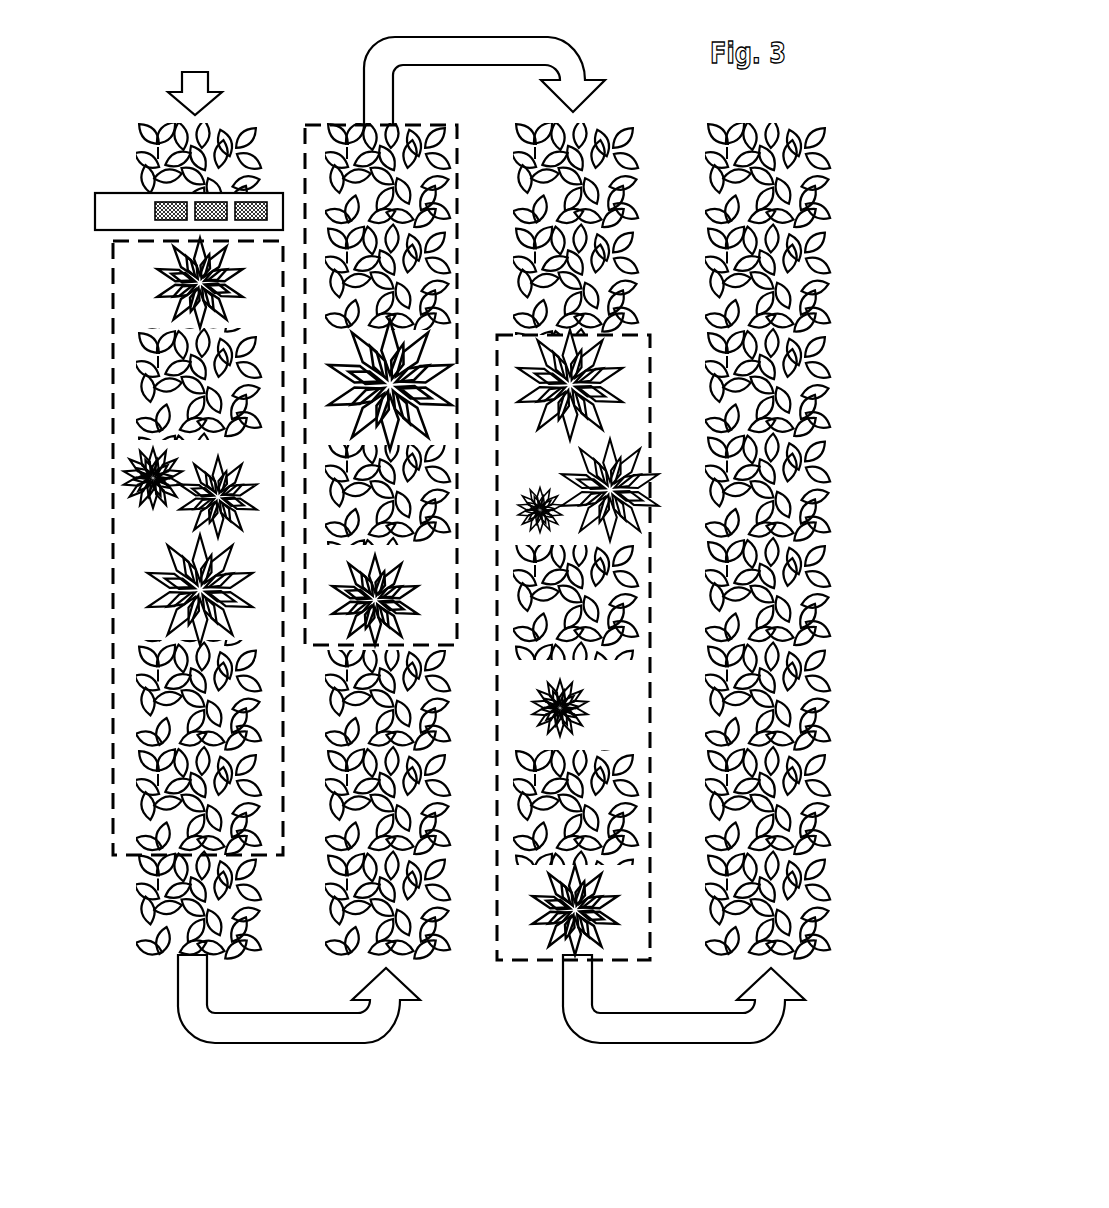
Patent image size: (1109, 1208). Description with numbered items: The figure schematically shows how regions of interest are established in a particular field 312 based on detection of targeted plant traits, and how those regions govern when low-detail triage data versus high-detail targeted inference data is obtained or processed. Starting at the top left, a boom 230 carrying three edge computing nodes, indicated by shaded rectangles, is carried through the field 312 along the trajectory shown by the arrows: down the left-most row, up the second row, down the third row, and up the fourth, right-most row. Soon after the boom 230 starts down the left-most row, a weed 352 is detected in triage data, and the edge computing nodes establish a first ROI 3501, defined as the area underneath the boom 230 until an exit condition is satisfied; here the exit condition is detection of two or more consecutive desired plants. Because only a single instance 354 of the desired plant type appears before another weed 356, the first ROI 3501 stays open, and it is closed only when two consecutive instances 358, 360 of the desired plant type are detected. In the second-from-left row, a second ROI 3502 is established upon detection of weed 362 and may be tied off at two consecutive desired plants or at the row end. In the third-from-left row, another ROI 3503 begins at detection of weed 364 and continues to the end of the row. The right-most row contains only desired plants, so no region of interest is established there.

The boom 230 is at (275, 193).
The field 312 is at (895, 335).
The first ROI 3501 is at (113, 358).
The second ROI 3502 is at (460, 219).
The third ROI 3503 is at (651, 356).
The weed 352 is at (145, 297).
The single instance of the desired plant type 354 is at (128, 396).
The weed 356 is at (115, 478).
The first consecutive instance of the desired plant type 358 is at (128, 688).
The second consecutive instance of the desired plant type 360 is at (128, 790).
The weed 362 is at (340, 605).
The weed 364 is at (512, 393).